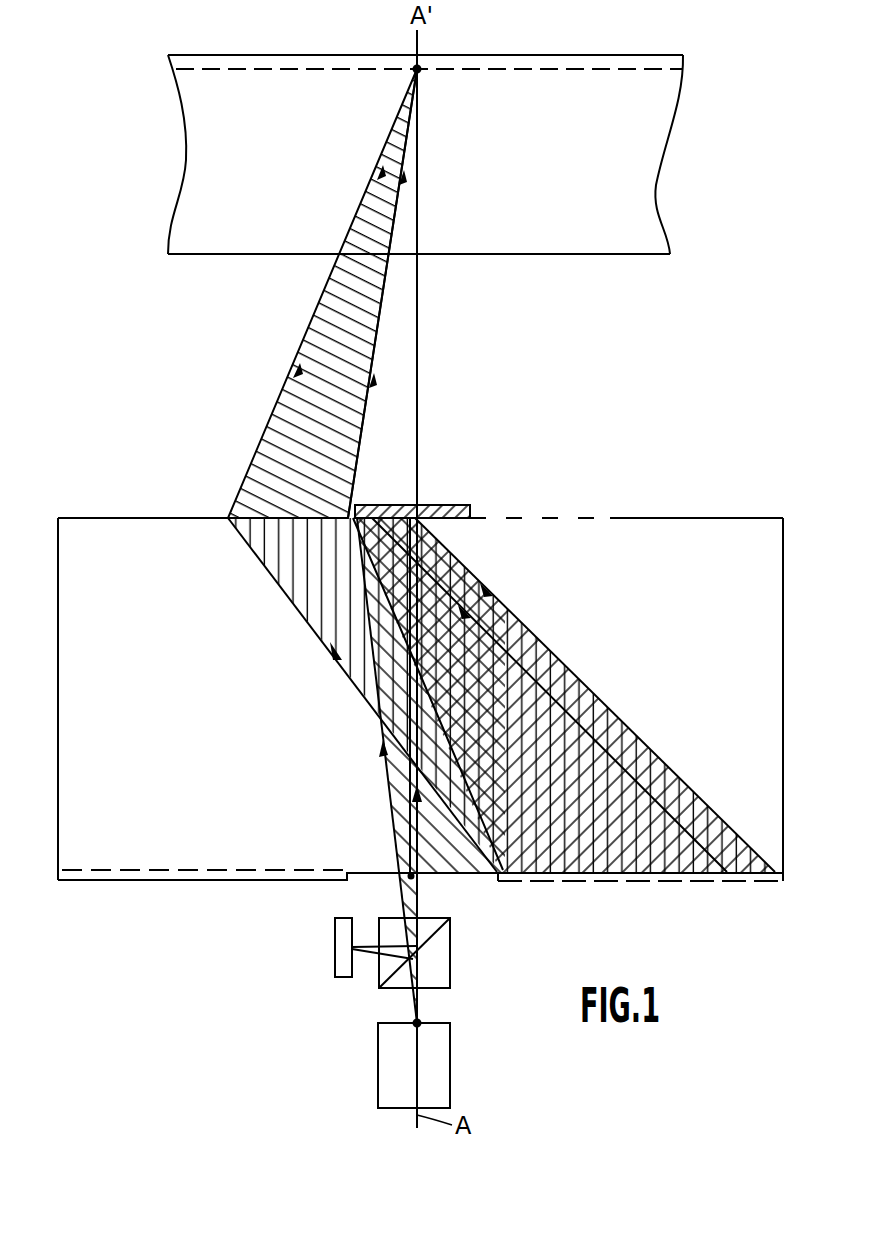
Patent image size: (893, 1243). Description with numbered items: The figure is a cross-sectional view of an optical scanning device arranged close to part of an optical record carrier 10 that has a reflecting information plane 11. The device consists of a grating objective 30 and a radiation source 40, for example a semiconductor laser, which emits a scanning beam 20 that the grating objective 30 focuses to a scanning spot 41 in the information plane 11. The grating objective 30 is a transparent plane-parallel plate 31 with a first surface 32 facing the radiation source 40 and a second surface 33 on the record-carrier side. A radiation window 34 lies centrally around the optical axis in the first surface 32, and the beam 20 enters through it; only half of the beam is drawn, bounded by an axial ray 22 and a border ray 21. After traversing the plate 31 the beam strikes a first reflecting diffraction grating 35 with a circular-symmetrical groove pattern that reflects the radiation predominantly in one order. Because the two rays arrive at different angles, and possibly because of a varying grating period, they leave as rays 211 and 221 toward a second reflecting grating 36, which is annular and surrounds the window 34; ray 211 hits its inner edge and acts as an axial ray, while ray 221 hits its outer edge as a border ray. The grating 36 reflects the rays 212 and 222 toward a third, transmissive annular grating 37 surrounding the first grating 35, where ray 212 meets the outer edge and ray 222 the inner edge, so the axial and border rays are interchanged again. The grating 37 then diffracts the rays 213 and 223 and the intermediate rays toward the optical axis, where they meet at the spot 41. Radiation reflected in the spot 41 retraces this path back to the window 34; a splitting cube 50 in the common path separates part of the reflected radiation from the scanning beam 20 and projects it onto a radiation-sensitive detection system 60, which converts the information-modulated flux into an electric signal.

The optical record carrier 10 is at (162, 166).
The reflecting information plane 11 is at (212, 69).
The scanning spot 41 is at (418, 68).
The scanning beam 20 is at (409, 911).
The border ray 21 is at (392, 821).
The diffracted border ray 211 is at (499, 876).
The reflected border ray 212 is at (346, 676).
The transmitted border ray 213 is at (300, 352).
The axial ray 22 is at (419, 836).
The diffracted axial ray 221 is at (540, 610).
The reflected axial ray 222 is at (463, 612).
The transmitted axial ray 223 is at (380, 352).
The grating objective 30 is at (52, 706).
The transparent plane-parallel plate 31 is at (765, 598).
The first surface 32 is at (160, 871).
The second surface 33 is at (150, 514).
The radiation window 34 is at (472, 874).
The first reflecting diffraction grating 35 is at (439, 505).
The second reflecting grating 36 is at (233, 881).
The third transmissive grating 37 is at (250, 512).
The radiation source 40 is at (378, 1065).
The splitting cube 50 is at (470, 958).
The radiation-sensitive detection system 60 is at (335, 937).